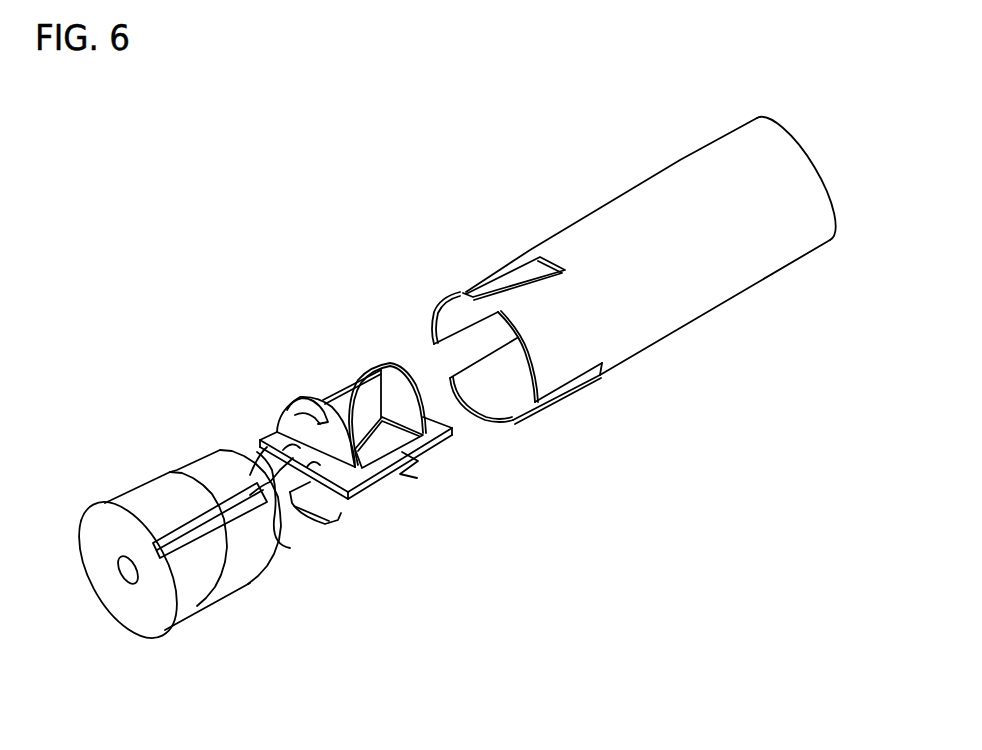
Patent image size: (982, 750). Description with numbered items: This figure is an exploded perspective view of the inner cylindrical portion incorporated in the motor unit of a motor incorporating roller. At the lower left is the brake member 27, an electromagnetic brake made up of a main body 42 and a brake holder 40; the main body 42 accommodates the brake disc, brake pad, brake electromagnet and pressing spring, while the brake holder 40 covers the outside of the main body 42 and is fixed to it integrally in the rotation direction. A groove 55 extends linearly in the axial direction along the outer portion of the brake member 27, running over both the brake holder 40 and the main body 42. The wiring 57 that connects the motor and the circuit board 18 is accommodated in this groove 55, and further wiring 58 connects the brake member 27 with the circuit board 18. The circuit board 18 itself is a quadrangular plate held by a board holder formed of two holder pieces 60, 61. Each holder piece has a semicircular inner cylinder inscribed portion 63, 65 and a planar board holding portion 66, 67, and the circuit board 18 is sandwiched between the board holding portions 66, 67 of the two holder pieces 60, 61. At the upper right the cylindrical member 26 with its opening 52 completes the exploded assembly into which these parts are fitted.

The cylindrical case 26 is at (619, 317).
The slot 52 is at (523, 277).
The inner cylinder inscribed portion 65 is at (402, 480).
The circuit board 18 is at (366, 430).
The board holding portion 66 is at (452, 437).
The holder piece 60 is at (351, 390).
The inner cylinder inscribed portion 63 is at (300, 395).
The groove 55 is at (275, 486).
The holder piece 61 is at (372, 495).
The board holding portion 67 is at (414, 460).
The wiring 58 is at (292, 518).
The brake member 27 is at (183, 589).
The brake holder 40 is at (145, 582).
The wiring 57 is at (127, 634).
The main body 42 is at (257, 563).